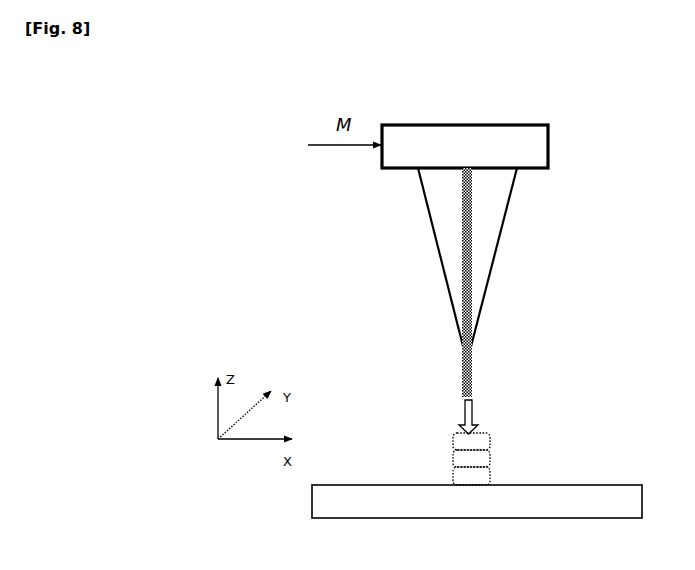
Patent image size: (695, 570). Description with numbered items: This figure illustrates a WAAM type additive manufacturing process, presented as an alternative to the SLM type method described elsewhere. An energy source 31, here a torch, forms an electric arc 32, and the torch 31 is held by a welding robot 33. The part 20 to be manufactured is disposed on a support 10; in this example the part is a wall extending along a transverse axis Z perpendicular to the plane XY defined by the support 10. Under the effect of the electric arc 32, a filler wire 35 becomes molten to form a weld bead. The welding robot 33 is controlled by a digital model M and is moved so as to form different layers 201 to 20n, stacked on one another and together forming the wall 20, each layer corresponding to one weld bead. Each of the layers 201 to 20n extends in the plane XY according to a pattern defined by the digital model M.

The support 10 is at (599, 497).
The part 20 is at (542, 445).
The layer 20n is at (492, 442).
The layer 201 is at (510, 469).
The energy source 31 is at (494, 268).
The electric arc 32 is at (461, 406).
The welding robot 33 is at (530, 146).
The filler wire 35 is at (480, 368).